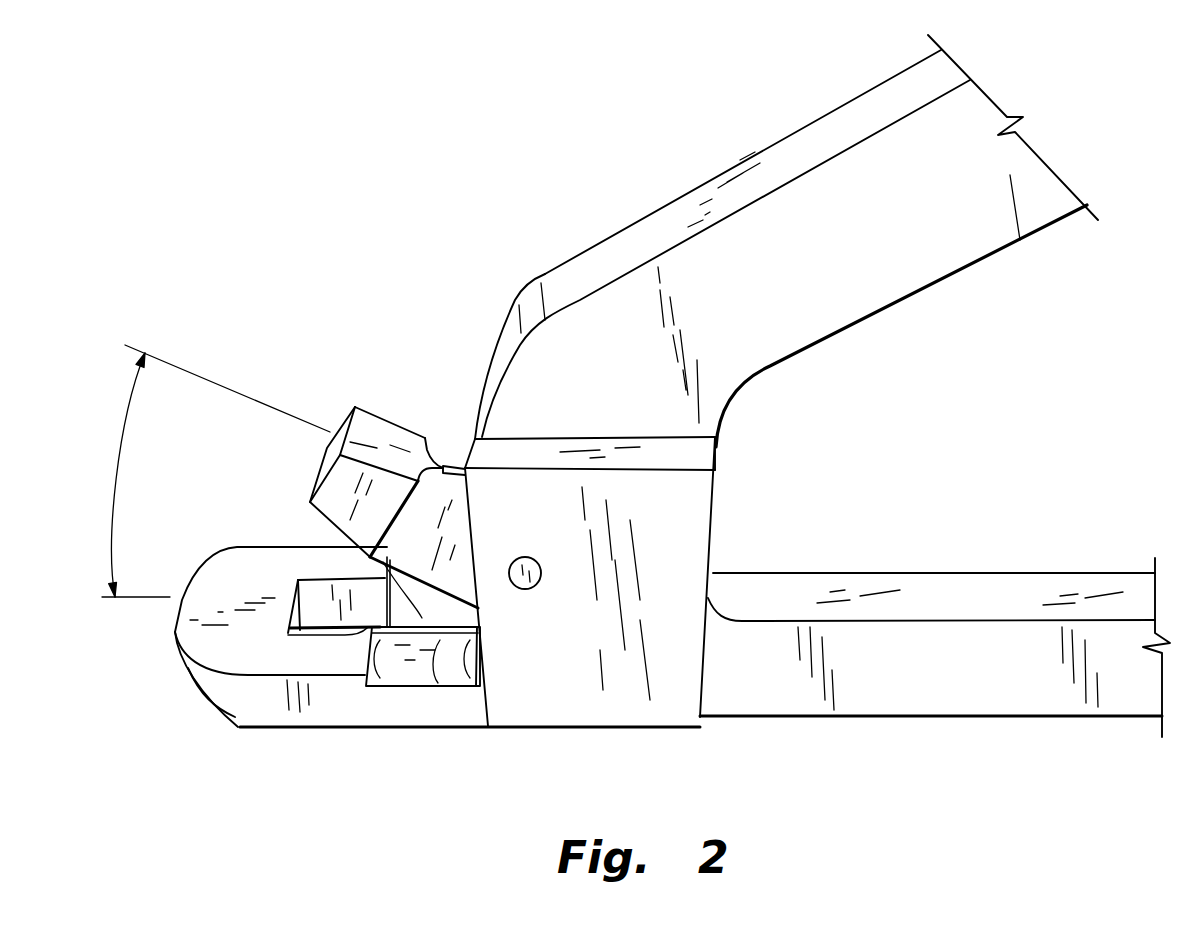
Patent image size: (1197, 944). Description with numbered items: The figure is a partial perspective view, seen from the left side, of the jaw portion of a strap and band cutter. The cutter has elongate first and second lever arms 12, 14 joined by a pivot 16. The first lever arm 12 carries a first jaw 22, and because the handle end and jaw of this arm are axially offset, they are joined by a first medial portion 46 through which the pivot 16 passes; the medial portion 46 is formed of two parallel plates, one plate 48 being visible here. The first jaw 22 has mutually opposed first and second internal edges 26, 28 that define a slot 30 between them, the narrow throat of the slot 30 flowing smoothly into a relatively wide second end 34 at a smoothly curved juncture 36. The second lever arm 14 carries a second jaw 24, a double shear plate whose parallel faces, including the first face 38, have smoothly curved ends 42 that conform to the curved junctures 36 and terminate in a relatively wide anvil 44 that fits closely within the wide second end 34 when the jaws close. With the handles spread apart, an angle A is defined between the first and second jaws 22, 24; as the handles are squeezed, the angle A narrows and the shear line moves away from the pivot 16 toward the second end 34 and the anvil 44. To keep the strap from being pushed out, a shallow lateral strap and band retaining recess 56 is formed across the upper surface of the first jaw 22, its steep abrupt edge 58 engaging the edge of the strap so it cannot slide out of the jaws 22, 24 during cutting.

The first lever arm 12 is at (830, 111).
The second lever arm 14 is at (1040, 716).
The pivot 16 is at (528, 592).
The first jaw 22 is at (242, 727).
The second jaw 24 is at (458, 493).
The first internal edge 26 is at (388, 570).
The second internal edge 28 is at (421, 712).
The slot 30 is at (400, 640).
The second end 34 is at (298, 590).
The curved junctures 36 is at (365, 633).
The first face 38 is at (460, 528).
The curved ends 42 is at (428, 455).
The anvil 44 is at (355, 409).
The first medial portion 46 is at (715, 493).
The plate 48 is at (683, 518).
The strap and band retaining recess 56 is at (455, 662).
The abrupt edge 58 is at (383, 658).
The angle A is at (114, 472).